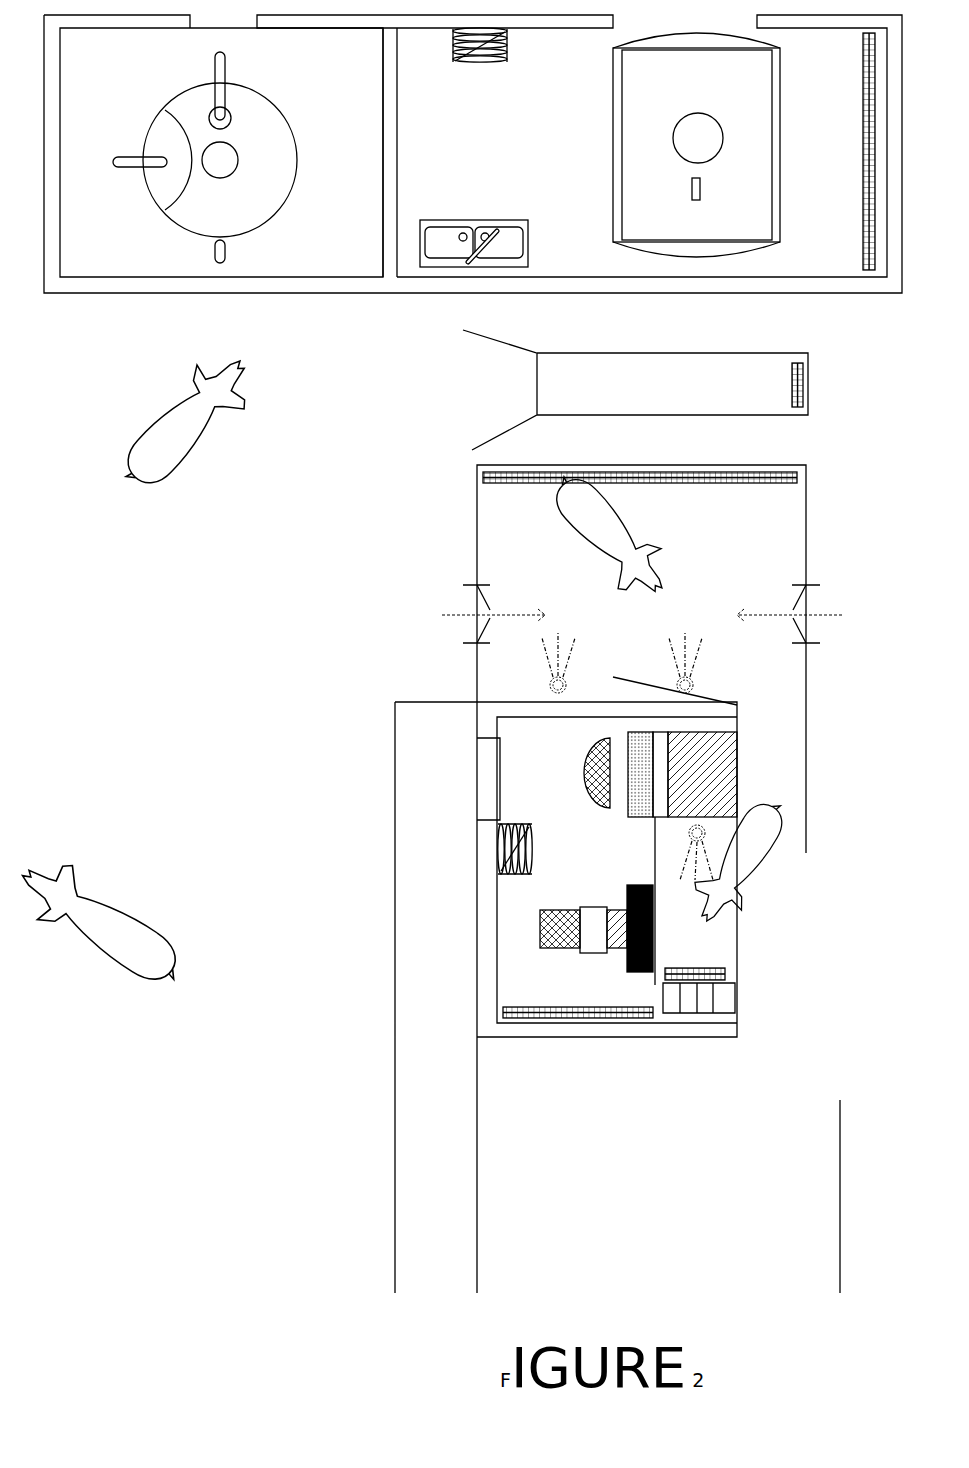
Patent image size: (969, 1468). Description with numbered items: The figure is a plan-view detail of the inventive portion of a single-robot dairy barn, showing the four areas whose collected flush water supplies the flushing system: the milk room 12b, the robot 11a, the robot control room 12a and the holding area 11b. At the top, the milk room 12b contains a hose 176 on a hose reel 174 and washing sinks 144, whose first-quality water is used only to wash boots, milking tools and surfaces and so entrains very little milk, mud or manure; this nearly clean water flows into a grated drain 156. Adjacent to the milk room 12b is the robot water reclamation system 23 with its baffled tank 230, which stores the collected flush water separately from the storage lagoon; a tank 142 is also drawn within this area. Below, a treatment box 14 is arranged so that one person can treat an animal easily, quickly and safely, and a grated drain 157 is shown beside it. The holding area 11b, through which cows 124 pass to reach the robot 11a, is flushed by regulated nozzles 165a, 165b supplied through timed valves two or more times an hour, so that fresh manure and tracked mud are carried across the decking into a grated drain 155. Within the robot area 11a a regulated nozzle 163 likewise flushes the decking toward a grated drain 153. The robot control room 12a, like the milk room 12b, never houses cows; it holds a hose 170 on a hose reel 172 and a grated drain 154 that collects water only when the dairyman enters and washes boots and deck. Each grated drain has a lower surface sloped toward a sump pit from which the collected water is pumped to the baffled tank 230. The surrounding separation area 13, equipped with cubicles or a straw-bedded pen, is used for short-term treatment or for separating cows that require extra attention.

The robot water reclamation system 23 is at (307, 75).
The baffled tank 230 is at (143, 138).
The milk room 12b is at (492, 165).
The hose reel 174 is at (497, 63).
The hose 176 is at (457, 37).
The washing sink 144 is at (523, 265).
The tank 142 is at (715, 87).
The grated drain 156 is at (863, 48).
The treatment box 14 is at (598, 395).
The grated drain 157 is at (810, 415).
The holding area 11b is at (757, 544).
The grated drain 155 is at (793, 484).
The regulated nozzle 165b is at (553, 693).
The regulated nozzle 165a is at (705, 693).
The robot control room 12a is at (610, 984).
The robot 11a is at (737, 787).
The hose reel 172 is at (535, 812).
The hose 170 is at (505, 876).
The regulated nozzle 163 is at (690, 840).
The grated drain 154 is at (557, 1007).
The grated drain 153 is at (713, 985).
The cow 124 is at (140, 440).
The separation area 13 is at (195, 1128).